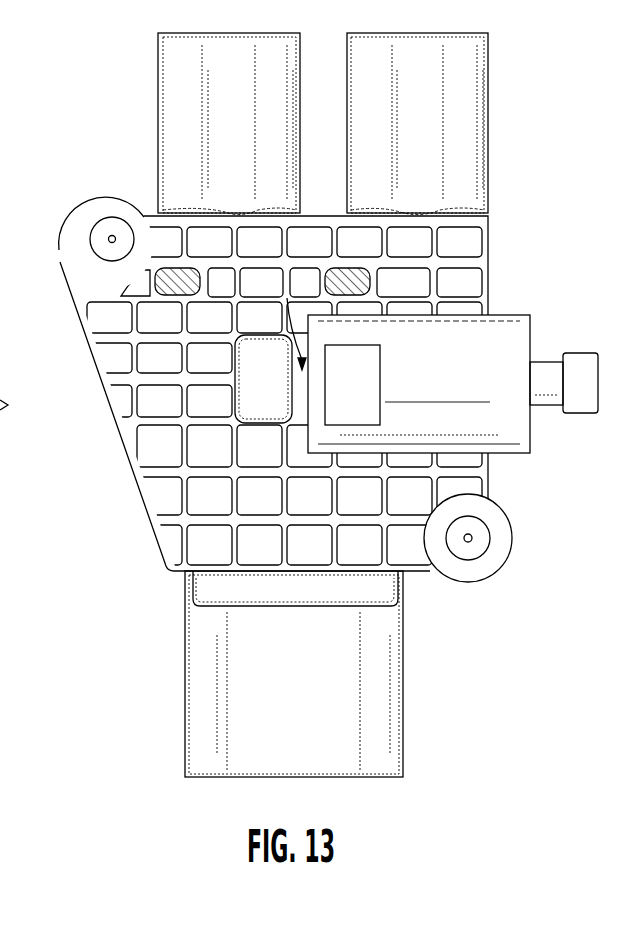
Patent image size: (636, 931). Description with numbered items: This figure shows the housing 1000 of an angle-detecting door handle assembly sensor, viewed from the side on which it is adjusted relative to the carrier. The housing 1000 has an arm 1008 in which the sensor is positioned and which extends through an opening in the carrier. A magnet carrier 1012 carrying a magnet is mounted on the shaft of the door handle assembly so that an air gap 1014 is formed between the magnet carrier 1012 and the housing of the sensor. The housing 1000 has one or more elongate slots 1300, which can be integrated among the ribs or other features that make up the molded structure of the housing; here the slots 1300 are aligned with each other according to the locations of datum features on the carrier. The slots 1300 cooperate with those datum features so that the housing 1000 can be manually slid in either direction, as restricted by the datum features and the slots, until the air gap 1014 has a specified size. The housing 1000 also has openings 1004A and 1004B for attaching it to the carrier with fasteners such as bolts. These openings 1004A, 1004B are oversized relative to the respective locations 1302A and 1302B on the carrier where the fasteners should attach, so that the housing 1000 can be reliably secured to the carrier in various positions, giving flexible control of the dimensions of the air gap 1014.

The housing 1000 is at (133, 482).
The opening 1004A is at (84, 258).
The opening 1004B is at (458, 560).
The arm 1008 is at (236, 397).
The magnet carrier 1012 is at (530, 432).
The air gap 1014 is at (293, 320).
The elongate slot 1300 is at (176, 268).
The fastener location 1302A is at (110, 237).
The fastener location 1302B is at (470, 536).